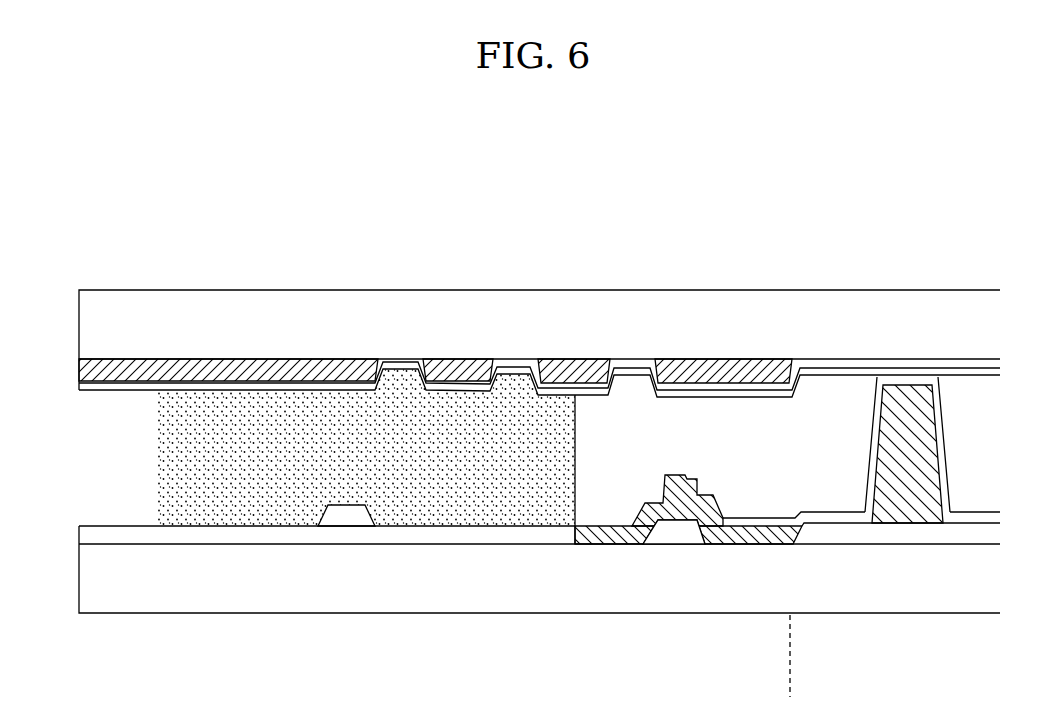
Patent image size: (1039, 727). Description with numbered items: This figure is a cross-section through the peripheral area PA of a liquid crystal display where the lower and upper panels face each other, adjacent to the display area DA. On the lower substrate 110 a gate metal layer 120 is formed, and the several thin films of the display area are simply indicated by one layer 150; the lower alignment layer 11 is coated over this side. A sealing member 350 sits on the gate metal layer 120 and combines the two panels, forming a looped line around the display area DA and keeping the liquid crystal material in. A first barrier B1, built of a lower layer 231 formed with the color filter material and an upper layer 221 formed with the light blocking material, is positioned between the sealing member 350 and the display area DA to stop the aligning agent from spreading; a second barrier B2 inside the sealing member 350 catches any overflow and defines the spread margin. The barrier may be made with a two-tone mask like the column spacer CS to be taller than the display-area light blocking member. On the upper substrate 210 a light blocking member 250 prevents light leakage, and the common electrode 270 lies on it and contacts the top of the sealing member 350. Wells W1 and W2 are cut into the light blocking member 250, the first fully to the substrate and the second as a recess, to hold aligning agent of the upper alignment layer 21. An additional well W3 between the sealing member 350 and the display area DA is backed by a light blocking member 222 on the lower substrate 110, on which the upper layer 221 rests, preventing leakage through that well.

The upper substrate 210 is at (708, 305).
The upper alignment layer 21 is at (823, 372).
The light blocking member 250 is at (260, 362).
The well W2 is at (401, 362).
The well W1 is at (515, 362).
The well W3 is at (630, 362).
The common electrode 270 is at (943, 364).
The sealing member 350 is at (226, 485).
The barrier B2 is at (347, 515).
The gate metal layer 120 is at (430, 535).
The lower substrate 110 is at (505, 590).
The light blocking member 222 is at (590, 535).
The upper layer 221 is at (668, 482).
The lower layer 231 is at (685, 537).
The barrier B1 is at (676, 594).
The lower alignment layer 11 is at (975, 517).
The layer 150 is at (917, 537).
The column spacer CS is at (917, 427).
The peripheral area PA is at (780, 680).
The display area DA is at (792, 684).